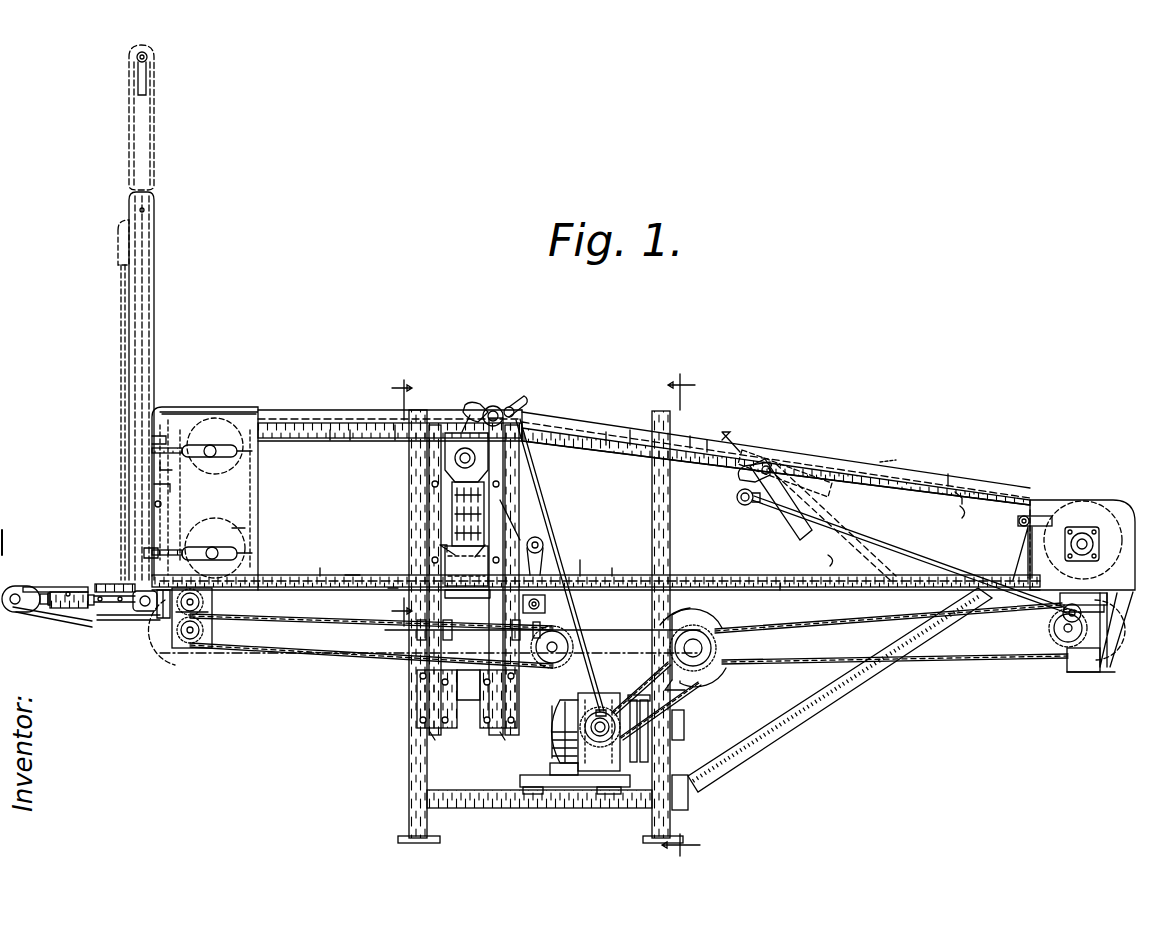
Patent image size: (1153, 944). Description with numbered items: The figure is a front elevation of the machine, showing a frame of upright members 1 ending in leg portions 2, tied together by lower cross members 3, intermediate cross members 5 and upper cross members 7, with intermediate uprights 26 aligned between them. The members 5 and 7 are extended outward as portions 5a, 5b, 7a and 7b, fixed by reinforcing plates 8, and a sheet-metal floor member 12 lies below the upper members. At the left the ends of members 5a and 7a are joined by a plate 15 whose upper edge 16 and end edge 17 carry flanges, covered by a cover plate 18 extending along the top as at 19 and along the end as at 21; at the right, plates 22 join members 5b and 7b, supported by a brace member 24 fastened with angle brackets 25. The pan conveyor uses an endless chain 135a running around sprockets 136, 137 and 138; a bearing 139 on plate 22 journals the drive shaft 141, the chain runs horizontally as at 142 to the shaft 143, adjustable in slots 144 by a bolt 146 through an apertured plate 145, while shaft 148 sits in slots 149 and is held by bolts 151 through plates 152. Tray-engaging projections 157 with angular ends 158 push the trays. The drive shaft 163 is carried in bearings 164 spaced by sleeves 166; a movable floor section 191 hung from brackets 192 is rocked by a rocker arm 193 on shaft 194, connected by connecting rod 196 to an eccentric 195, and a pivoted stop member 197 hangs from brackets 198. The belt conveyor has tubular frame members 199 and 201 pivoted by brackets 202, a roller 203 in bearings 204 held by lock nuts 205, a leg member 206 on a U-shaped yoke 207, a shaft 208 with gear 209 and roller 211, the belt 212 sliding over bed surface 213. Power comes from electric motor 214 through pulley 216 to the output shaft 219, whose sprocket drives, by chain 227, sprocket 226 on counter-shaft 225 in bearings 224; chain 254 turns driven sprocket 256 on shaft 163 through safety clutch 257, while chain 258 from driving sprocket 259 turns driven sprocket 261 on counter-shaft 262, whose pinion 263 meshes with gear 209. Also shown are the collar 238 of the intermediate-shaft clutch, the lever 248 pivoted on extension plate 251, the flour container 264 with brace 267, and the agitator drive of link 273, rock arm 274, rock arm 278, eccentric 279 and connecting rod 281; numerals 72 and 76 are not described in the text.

The upright members 1 is at (409, 765).
The leg portions 2 is at (428, 822).
The lower cross members 3 is at (562, 824).
The intermediate cross members 5 is at (640, 600).
The extended portion of member 5 5a is at (346, 577).
The extended portion of member 5 5b is at (782, 586).
The upper cross members 7 is at (606, 446).
The extended portion of member 7 7a is at (335, 432).
The extended portion of member 7 7b is at (948, 474).
The reinforcing plates 8 is at (396, 432).
The floor member 12 is at (352, 432).
The plates 15 is at (255, 498).
The upper edges 16 is at (212, 407).
The end edges 17 is at (154, 488).
The cover plate 18 is at (176, 406).
The cover portion along top edges 19 is at (188, 406).
The cover portion along end edges 21 is at (155, 505).
The plates 22 is at (1066, 502).
The brace members 24 is at (864, 695).
The angle brackets 25 is at (690, 789).
The intermediate uprights 26 is at (523, 420).
The slide block 72 is at (467, 572).
The bearing plate 76 is at (512, 760).
The endless chain 135a is at (888, 462).
The sprocket 136 is at (1060, 508).
The sprocket 137 is at (246, 528).
The sprocket 138 is at (238, 444).
The bearing 139 is at (1096, 530).
The drive shaft 141 is at (1084, 532).
The horizontal chain portion 142 is at (582, 564).
The shaft 143 is at (214, 548).
The slots 144 is at (228, 538).
The apertured plate 145 is at (150, 552).
The threaded bolt 146 is at (242, 556).
The shaft 148 is at (242, 461).
The slots 149 is at (216, 440).
The bolts 151 is at (160, 466).
The plates 152 is at (152, 440).
The tray-engaging projections 157 is at (320, 568).
The angular free ends 158 is at (800, 543).
The shaft 163 is at (1076, 648).
The bearings 164 is at (1065, 642).
The spacing sleeves 166 is at (1088, 582).
The movable floor section 191 is at (802, 535).
The brackets 192 is at (778, 468).
The rocker arm 193 is at (738, 497).
The shaft 194 is at (754, 464).
The eccentric 195 is at (1055, 630).
The connecting rod 196 is at (944, 540).
The stop member 197 is at (1026, 550).
The brackets 198 is at (1018, 521).
The tubular frame member 199 is at (150, 122).
The tubular frame member 201 is at (80, 610).
The brackets 202 is at (140, 613).
The roller 203 is at (38, 614).
The bearings 204 is at (20, 590).
The lock nuts 205 is at (50, 591).
The leg member 206 is at (121, 300).
The U-shaped yoke 207 is at (118, 240).
The shaft 208 is at (205, 600).
The driving gear 209 is at (208, 612).
The roller 211 is at (158, 620).
The conveyor belt 212 is at (108, 592).
The bed surface 213 is at (86, 587).
The electric motor 214 is at (566, 700).
The pulley 216 is at (684, 722).
The output driving shaft 219 is at (603, 708).
The bearings 224 is at (702, 678).
The counter-shaft 225 is at (704, 640).
The driven sprocket 226 is at (692, 612).
The chain 227 is at (690, 698).
The collar 238 is at (556, 626).
The lever 248 is at (540, 540).
The extension plate 251 is at (545, 600).
The chain 254 is at (936, 660).
The driven sprocket 256 is at (1062, 616).
The safety clutch 257 is at (1090, 673).
The chain 258 is at (306, 652).
The driving sprocket 259 is at (576, 646).
The driven sprocket 261 is at (200, 642).
The counter-shaft 262 is at (208, 620).
The pinion 263 is at (174, 668).
The flour container 264 is at (445, 458).
The brace 267 is at (488, 545).
The link 273 is at (462, 432).
The rock arm 274 is at (488, 406).
The rock arm 278 is at (526, 396).
The eccentric 279 is at (586, 535).
The connecting rod 281 is at (512, 502).